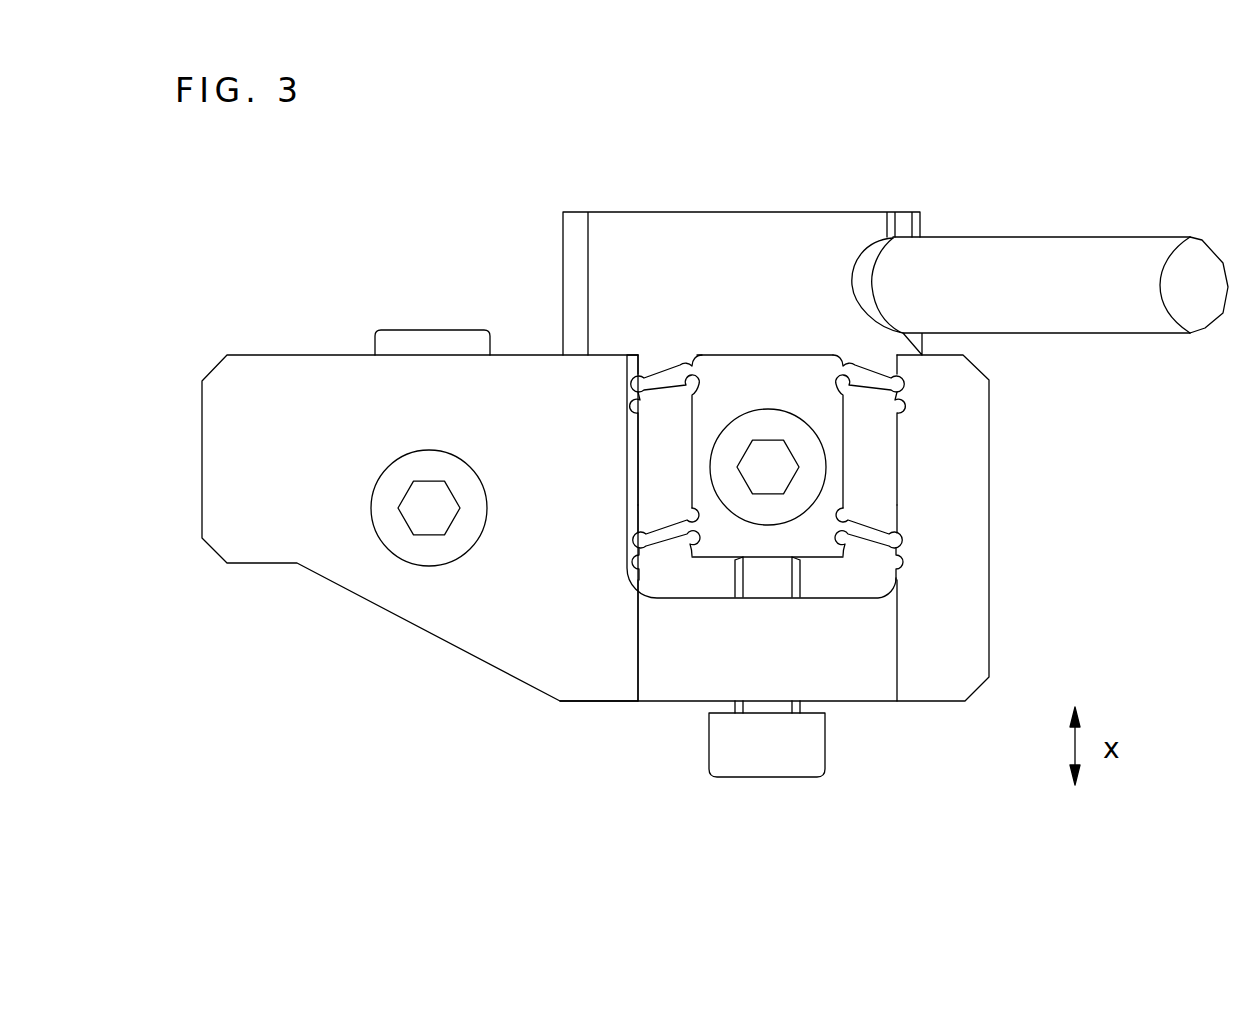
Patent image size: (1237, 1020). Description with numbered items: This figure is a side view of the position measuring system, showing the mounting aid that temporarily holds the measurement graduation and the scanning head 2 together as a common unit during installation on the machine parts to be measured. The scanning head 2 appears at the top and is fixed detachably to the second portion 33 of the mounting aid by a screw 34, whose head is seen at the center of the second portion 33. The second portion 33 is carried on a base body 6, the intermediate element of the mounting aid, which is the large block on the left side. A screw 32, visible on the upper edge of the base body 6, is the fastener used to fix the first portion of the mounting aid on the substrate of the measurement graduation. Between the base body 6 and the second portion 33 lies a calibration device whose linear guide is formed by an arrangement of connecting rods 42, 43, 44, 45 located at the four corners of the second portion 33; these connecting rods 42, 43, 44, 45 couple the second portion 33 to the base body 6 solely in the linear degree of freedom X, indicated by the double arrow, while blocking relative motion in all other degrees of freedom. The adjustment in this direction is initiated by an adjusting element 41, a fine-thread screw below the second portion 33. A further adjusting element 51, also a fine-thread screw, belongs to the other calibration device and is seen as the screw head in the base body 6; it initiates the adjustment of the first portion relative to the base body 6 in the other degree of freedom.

The scanning head 2 is at (822, 232).
The base body 6 is at (490, 625).
The screw 32 is at (426, 341).
The second portion 33 is at (767, 377).
The screw 34 is at (800, 492).
The adjusting element 41 is at (812, 740).
The connecting rod 42 is at (668, 377).
The connecting rod 43 is at (667, 535).
The connecting rod 44 is at (868, 380).
The connecting rod 45 is at (866, 540).
The adjusting element 51 is at (400, 533).